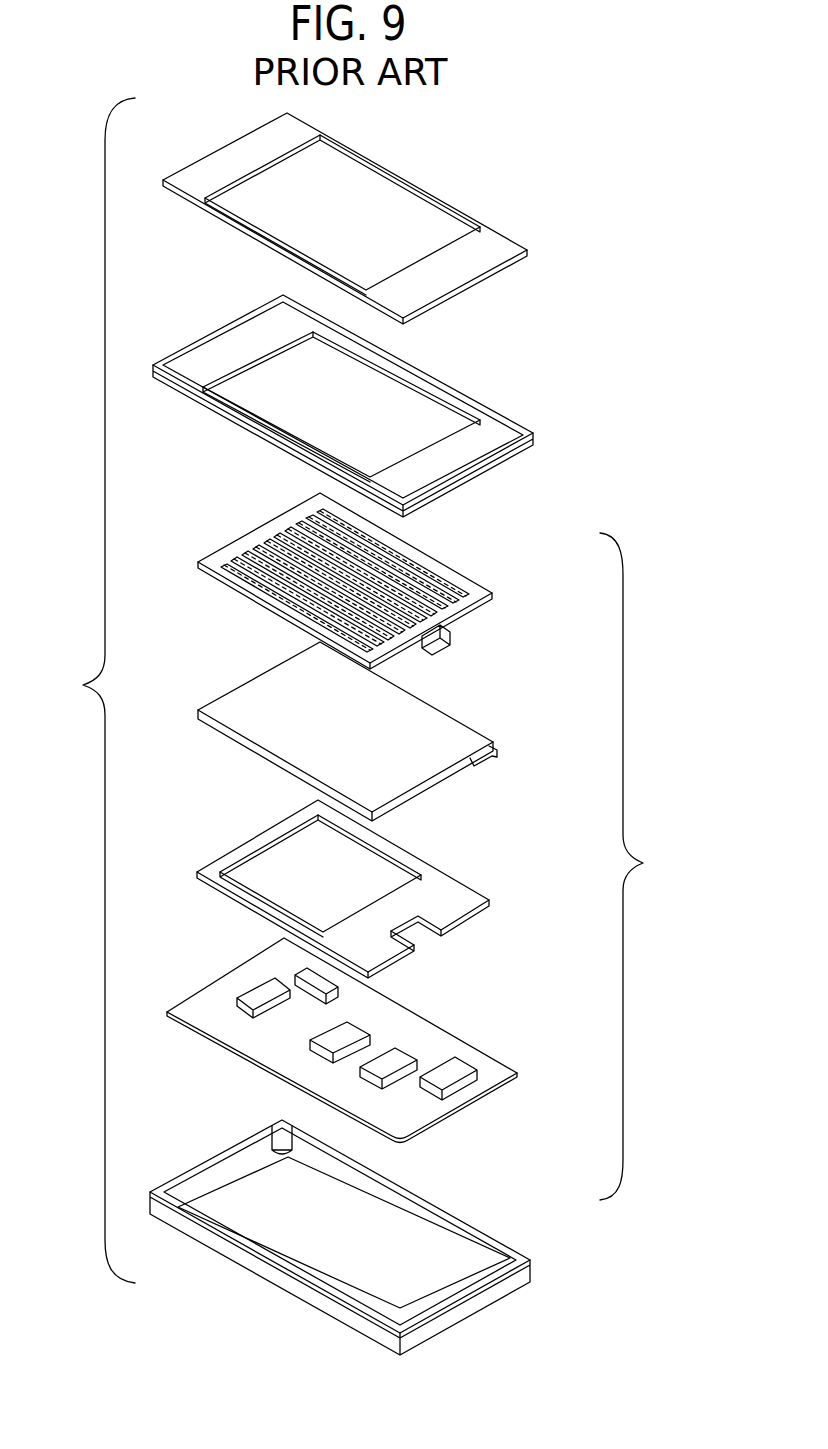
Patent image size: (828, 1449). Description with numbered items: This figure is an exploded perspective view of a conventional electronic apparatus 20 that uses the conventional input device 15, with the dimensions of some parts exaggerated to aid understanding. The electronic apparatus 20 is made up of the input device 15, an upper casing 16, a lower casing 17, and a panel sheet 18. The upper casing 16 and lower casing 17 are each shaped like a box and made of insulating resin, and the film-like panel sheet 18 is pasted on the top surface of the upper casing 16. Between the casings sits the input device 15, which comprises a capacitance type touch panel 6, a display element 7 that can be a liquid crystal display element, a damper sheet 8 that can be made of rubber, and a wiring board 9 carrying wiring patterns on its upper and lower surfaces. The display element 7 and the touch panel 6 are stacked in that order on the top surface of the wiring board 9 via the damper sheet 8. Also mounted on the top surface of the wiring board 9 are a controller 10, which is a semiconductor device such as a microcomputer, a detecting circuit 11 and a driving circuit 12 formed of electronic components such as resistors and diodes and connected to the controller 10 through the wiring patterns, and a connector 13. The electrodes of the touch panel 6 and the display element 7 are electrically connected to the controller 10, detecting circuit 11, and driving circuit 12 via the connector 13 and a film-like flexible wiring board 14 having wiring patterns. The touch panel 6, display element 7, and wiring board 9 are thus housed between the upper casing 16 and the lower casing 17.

The electronic apparatus 20 is at (88, 690).
The input device 15 is at (642, 866).
The panel sheet 18 is at (430, 193).
The upper casing 16 is at (493, 417).
The touch panel 6 is at (473, 580).
The flexible wiring board 14 is at (447, 630).
The display element 7 is at (475, 728).
The damper sheet 8 is at (470, 887).
The connector 13 is at (323, 983).
The wiring board 9 is at (467, 1042).
The controller 10 is at (467, 1080).
The detecting circuit 11 is at (400, 1073).
The driving circuit 12 is at (340, 1055).
The lower casing 17 is at (193, 1163).